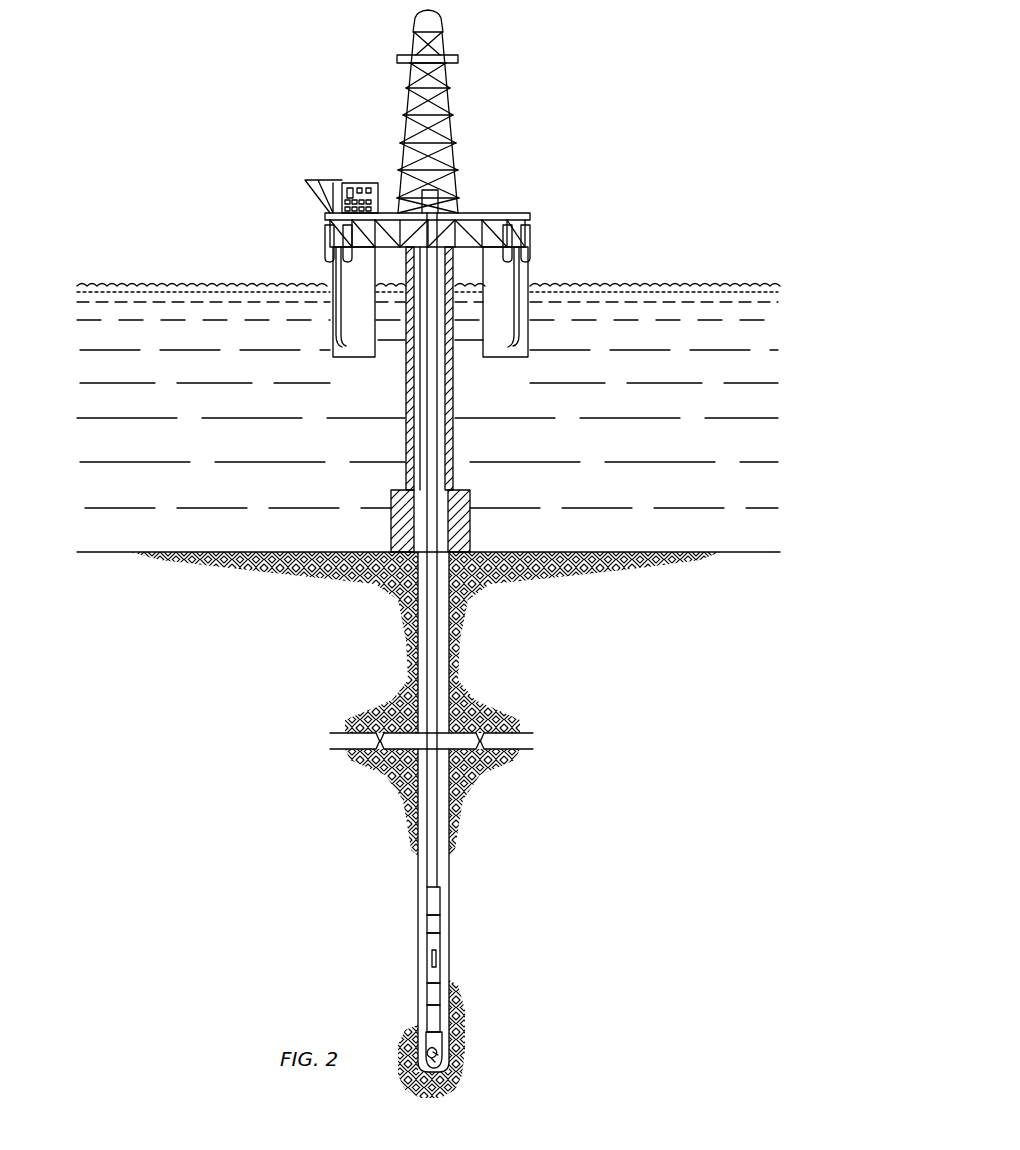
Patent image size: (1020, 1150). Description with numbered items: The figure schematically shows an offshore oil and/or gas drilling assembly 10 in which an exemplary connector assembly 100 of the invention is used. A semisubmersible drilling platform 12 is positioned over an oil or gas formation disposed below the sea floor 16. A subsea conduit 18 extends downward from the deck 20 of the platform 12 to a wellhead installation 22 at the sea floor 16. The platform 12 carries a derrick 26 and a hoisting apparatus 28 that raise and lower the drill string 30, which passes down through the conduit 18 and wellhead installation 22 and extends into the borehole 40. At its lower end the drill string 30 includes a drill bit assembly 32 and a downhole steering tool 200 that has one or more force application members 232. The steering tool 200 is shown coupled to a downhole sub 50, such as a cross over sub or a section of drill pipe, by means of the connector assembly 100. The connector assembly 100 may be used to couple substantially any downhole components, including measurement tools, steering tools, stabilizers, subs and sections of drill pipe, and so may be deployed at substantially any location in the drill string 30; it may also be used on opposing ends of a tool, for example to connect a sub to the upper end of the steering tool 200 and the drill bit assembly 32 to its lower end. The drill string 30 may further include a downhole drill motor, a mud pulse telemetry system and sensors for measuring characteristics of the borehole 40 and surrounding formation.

The offshore oil and/or gas drilling assembly 10 is at (512, 120).
The semisubmersible drilling platform 12 is at (508, 214).
The sea floor 16 is at (668, 552).
The subsea conduit 18 is at (453, 440).
The deck 20 is at (530, 250).
The wellhead installation 22 is at (470, 494).
The derrick 26 is at (428, 200).
The hoisting apparatus 28 is at (443, 43).
The drill string 30 is at (428, 372).
The drill bit assembly 32 is at (449, 1060).
The borehole 40 is at (418, 652).
The downhole sub 50 is at (432, 900).
The connector assembly 100 is at (432, 922).
The downhole steering tool 200 is at (432, 940).
The force application member 232 is at (432, 960).